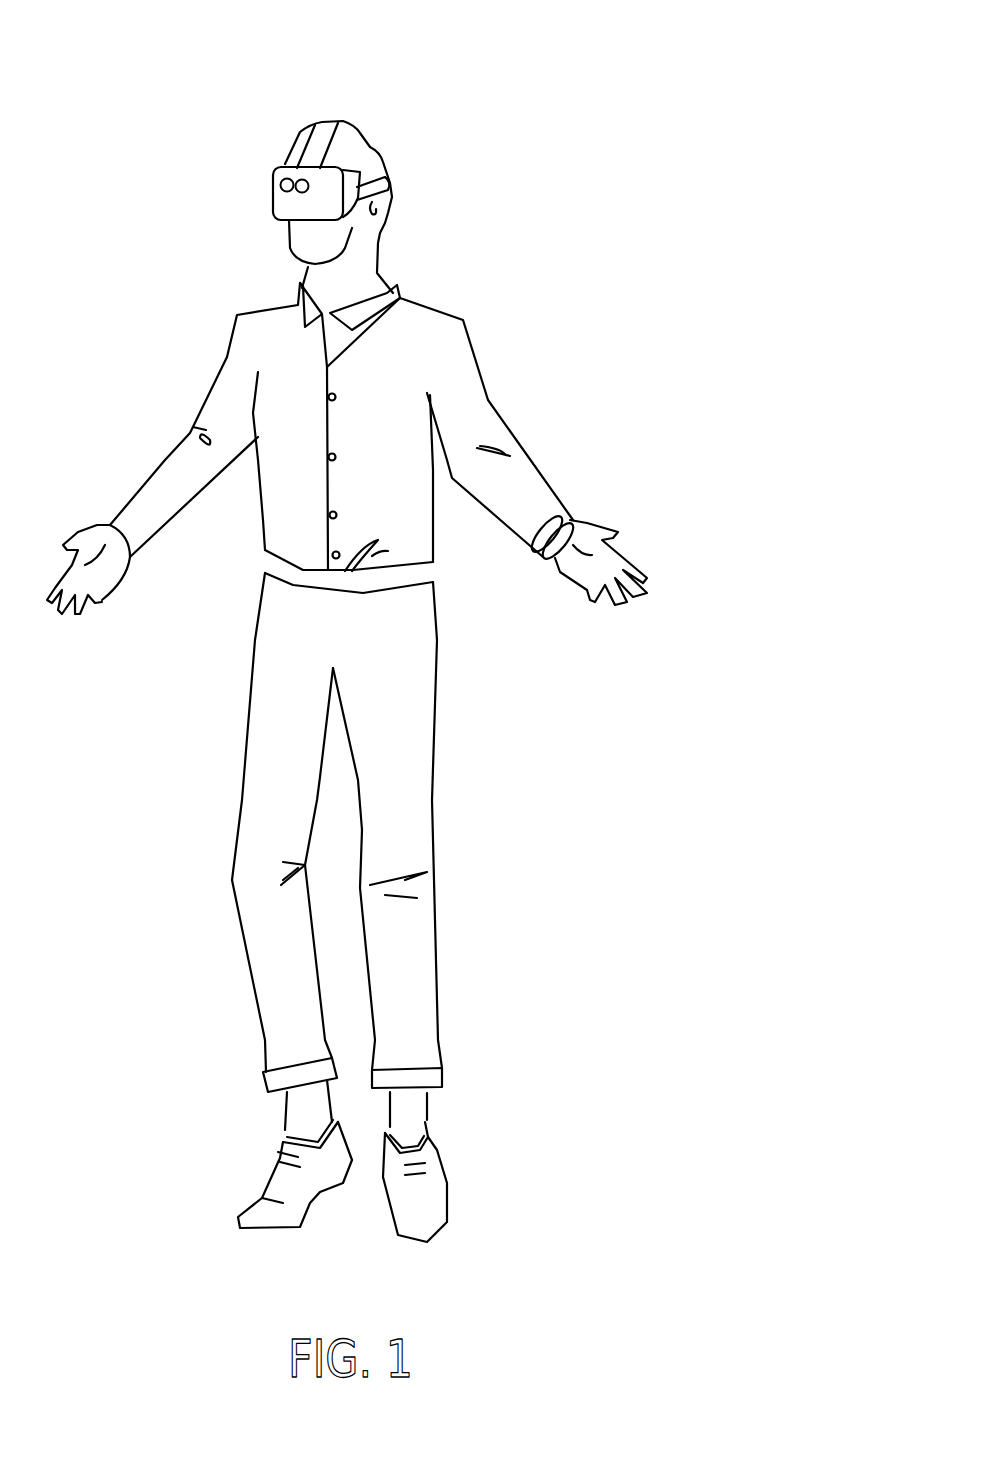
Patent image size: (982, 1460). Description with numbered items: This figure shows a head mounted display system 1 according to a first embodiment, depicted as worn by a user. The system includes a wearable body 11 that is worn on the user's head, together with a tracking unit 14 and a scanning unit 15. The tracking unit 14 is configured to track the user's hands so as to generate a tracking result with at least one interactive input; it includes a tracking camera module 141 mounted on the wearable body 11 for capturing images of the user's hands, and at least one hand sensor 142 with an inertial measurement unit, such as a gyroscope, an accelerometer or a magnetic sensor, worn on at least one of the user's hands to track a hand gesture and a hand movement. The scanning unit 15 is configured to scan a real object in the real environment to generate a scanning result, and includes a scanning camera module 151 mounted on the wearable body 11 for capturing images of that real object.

The head mounted display system 1 is at (532, 100).
The wearable body 11 is at (283, 197).
The tracking unit 14 is at (677, 210).
The tracking camera module 141 is at (307, 190).
The hand sensor 142 is at (560, 517).
The scanning unit 15 is at (270, 157).
The scanning camera module 151 is at (282, 185).